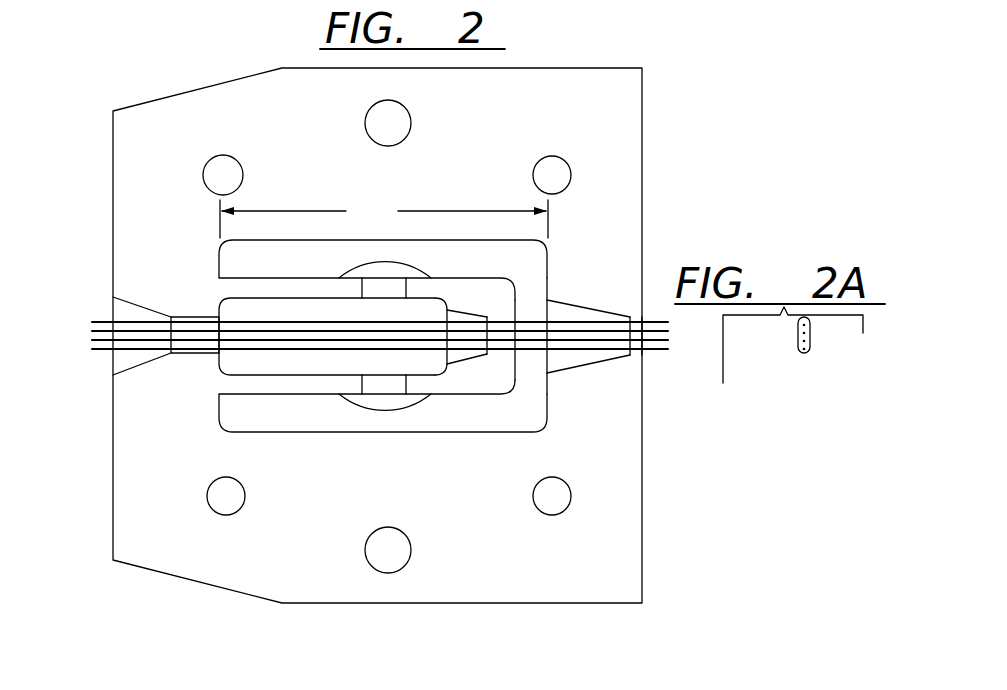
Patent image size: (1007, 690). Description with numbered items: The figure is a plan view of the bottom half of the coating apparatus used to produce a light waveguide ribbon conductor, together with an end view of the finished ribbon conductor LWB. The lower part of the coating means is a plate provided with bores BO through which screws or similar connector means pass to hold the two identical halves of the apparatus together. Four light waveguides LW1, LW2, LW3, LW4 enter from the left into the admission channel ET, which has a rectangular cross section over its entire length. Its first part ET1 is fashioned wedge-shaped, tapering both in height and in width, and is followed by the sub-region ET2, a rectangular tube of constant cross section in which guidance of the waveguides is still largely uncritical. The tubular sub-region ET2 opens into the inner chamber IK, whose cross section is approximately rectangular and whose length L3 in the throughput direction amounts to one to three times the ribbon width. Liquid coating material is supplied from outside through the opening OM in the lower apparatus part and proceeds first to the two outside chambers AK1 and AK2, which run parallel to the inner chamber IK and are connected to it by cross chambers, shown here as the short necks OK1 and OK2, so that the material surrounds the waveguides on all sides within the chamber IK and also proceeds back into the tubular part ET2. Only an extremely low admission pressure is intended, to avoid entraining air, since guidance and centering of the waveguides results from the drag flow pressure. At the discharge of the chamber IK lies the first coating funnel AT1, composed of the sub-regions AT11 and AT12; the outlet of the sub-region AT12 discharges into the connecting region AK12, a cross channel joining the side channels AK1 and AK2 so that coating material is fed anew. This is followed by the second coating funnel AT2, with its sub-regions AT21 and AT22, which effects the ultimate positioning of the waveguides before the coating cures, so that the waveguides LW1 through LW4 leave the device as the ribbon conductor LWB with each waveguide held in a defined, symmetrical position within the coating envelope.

In FIG. 2, the bores BO is at (218, 177).
In FIG. 2, the length of the chamber L3 is at (384, 218).
In FIG. 2, the outside chamber AK1 is at (227, 258).
In FIG. 2, the connecting region AK12 is at (535, 270).
In FIG. 2, the outside chamber AK2 is at (287, 417).
In FIG. 2, the first upper contact OK1 is at (380, 291).
In FIG. 2, the second upper contact OK2 is at (387, 387).
In FIG. 2, the opening OM is at (377, 400).
In FIG. 2, the inner chamber IK is at (423, 312).
In FIG. 2, the first coating funnel AT1 is at (457, 361).
In FIG. 2, the sub-region AT11 is at (513, 350).
In FIG. 2, the sub-region AT12 is at (470, 343).
In FIG. 2, the second coating funnel AT2 is at (618, 360).
In FIG. 2, the sub-region AT21 is at (567, 358).
In FIG. 2, the sub-region AT22 is at (643, 407).
In FIG. 2, the admission channel ET is at (121, 380).
In FIG. 2, the first part of the admission channel ET1 is at (147, 357).
In FIG. 2, the sub-region of the admission funnel ET2 is at (200, 353).
In FIG. 2, the light waveguide LW1 is at (96, 322).
In FIG. 2, the light waveguide LW2 is at (96, 331).
In FIG. 2, the light waveguide LW3 is at (96, 340).
In FIG. 2, the light waveguide LW4 is at (96, 350).
In FIG. 2A, the ribbon conductor LWB is at (803, 354).